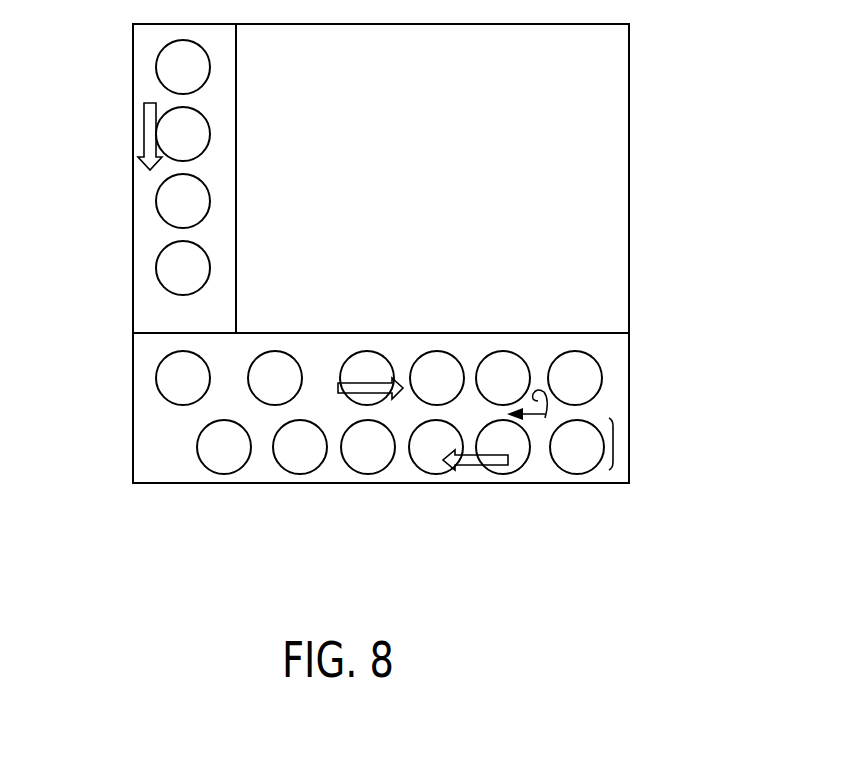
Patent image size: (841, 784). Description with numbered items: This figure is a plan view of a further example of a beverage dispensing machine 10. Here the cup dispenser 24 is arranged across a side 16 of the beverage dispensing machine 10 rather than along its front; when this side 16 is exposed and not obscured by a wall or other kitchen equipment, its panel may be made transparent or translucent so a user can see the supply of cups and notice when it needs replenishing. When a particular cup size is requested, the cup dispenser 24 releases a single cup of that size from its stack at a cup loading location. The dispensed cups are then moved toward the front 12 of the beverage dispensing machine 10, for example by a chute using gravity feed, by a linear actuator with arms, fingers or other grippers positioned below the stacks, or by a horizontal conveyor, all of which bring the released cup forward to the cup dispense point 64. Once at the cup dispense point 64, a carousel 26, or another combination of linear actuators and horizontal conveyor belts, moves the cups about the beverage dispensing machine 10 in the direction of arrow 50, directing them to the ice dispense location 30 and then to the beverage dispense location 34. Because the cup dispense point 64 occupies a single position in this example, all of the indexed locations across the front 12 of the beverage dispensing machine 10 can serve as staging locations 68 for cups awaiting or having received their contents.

The beverage dispensing machine 10 is at (658, 95).
The front 12 is at (356, 512).
The side 16 is at (110, 213).
The cup dispenser 24 is at (122, 134).
The carousel 26 is at (612, 402).
The ice dispense location 30 is at (410, 343).
The beverage dispense location 34 is at (524, 342).
The arrow 50 is at (545, 418).
The cup dispense point 64 is at (150, 360).
The staging locations 68 is at (617, 443).